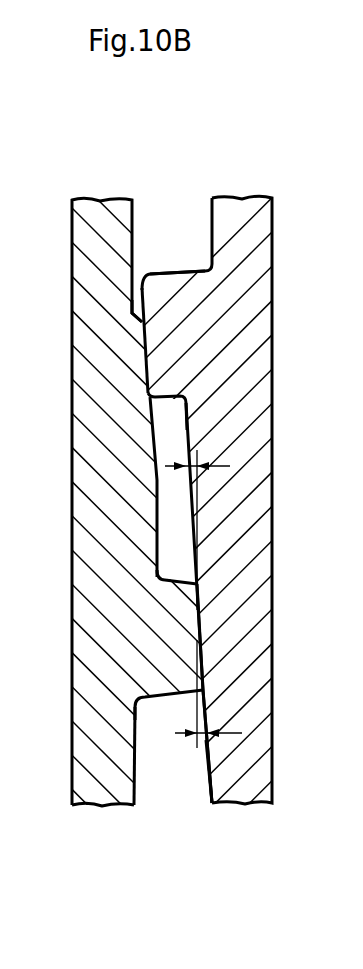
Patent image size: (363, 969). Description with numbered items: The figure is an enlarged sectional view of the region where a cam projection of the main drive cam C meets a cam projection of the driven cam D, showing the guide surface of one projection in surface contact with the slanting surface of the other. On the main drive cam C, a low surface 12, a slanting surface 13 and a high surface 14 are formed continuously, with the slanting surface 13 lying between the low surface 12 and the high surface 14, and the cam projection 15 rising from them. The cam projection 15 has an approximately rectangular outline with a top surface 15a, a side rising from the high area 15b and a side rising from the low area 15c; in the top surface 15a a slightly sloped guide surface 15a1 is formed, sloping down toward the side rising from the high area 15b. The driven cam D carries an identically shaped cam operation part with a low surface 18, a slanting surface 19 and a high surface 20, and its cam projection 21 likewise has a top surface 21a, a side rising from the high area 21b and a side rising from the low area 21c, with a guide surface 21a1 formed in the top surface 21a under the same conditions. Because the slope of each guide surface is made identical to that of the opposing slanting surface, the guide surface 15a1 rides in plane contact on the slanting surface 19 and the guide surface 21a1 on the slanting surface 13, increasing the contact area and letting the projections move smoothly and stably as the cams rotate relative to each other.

The low surface 12 is at (133, 223).
The slanting surface 13 is at (214, 358).
The high surface 14 is at (192, 492).
The cam projection 15 is at (147, 712).
The top surface 15a is at (210, 673).
The guide surface 15a1 is at (199, 593).
The side rising from the high area 15b is at (183, 566).
The side rising from the low area 15c is at (169, 705).
The low surface 18 is at (250, 770).
The slanting surface 19 is at (162, 558).
The high surface 20 is at (155, 468).
The cam projection 21 is at (190, 260).
The top surface 21a is at (133, 302).
The guide surface 21a1 is at (143, 370).
The side rising from the high area 21b is at (163, 405).
The side rising from the low area 21c is at (158, 265).
The main drive cam C is at (69, 231).
The driven cam D is at (280, 232).